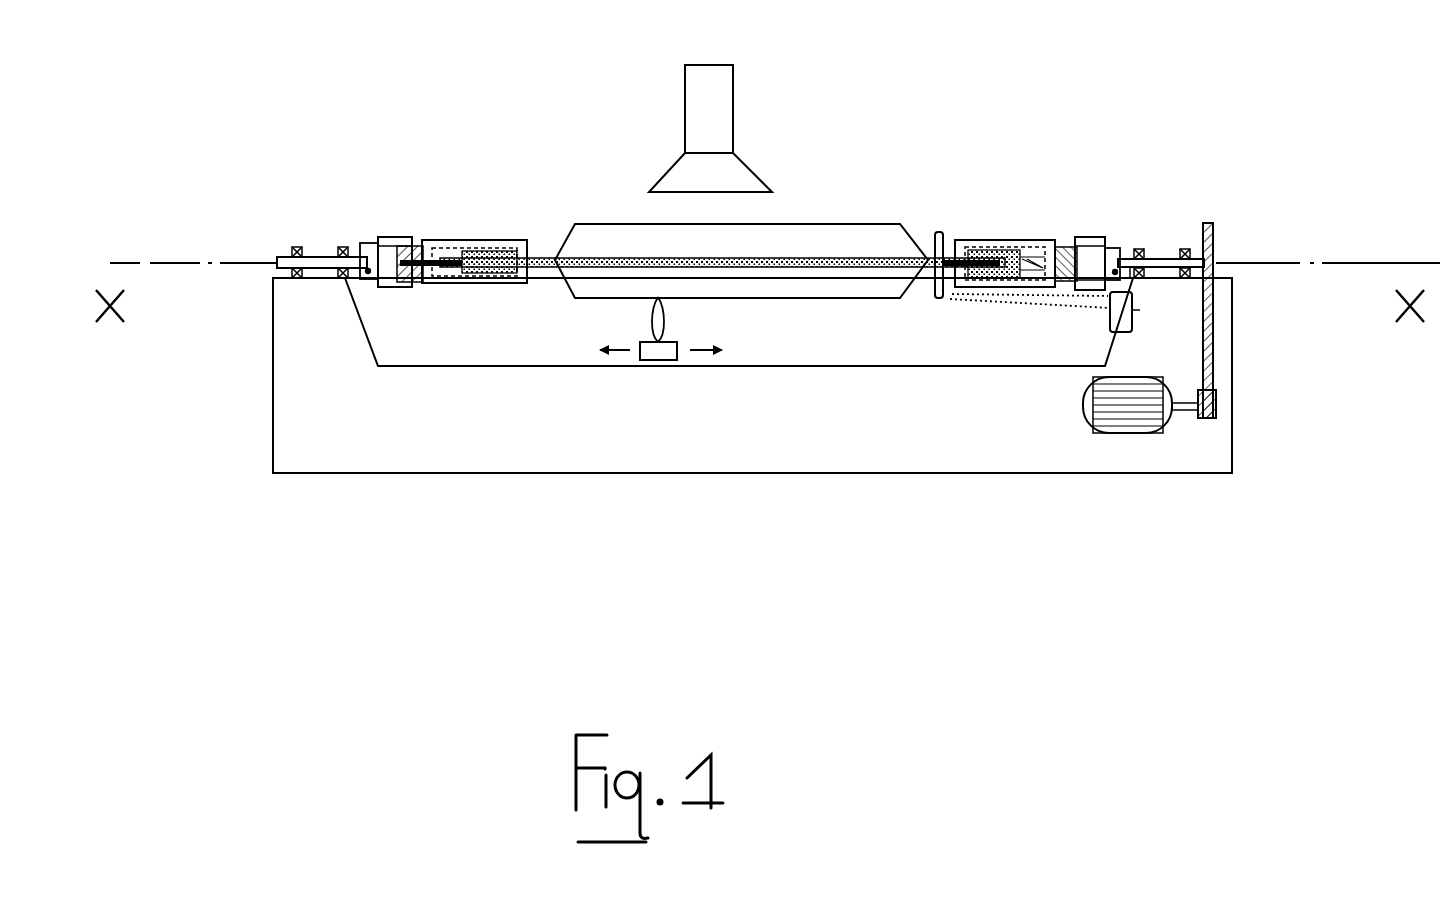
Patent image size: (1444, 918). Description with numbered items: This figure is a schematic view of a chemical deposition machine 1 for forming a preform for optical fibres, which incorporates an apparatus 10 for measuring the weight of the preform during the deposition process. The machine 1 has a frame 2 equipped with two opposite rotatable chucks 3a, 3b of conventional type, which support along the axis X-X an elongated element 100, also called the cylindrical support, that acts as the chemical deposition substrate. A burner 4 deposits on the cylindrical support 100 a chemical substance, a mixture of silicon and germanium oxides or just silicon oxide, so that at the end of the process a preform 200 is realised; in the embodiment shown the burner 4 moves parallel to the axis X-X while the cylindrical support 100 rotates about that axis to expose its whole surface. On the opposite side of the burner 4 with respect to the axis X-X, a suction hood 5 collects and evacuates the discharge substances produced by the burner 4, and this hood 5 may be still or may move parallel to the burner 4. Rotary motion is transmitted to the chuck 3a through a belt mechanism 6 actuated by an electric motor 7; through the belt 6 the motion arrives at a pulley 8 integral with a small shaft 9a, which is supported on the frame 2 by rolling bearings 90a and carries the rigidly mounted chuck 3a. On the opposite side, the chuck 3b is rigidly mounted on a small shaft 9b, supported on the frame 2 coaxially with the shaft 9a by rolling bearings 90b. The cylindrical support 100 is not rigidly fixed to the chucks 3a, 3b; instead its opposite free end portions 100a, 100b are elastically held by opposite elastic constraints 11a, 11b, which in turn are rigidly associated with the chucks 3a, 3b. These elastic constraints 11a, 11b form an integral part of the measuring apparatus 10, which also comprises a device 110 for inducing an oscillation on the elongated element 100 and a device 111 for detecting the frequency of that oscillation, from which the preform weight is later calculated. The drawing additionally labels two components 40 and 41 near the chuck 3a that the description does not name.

The chemical deposition machine 1 is at (595, 535).
The frame 2 is at (855, 425).
The chuck 3a is at (1097, 242).
The chuck 3b is at (390, 240).
The burner 4 is at (663, 348).
The suction hood 5 is at (720, 108).
The belt mechanism 6 is at (1218, 346).
The electric motor 7 is at (1128, 412).
The pulley 8 is at (1214, 236).
The small shaft 9a is at (1167, 256).
The small shaft 9b is at (317, 250).
The rolling bearings 90a is at (1140, 250).
The rolling bearings 90b is at (297, 247).
The apparatus for measuring the weight of the preform 10 is at (867, 318).
The elastic constraint 11a is at (999, 228).
The elastic constraint 11b is at (493, 238).
The plate 40 is at (940, 230).
The sensor 41 is at (1140, 305).
The elongated element 100 is at (611, 250).
The free end portion 100a is at (950, 294).
The free end portion 100b is at (545, 281).
The device for inducing an oscillation 110 is at (1036, 297).
The device for detecting the frequency of oscillation 111 is at (1143, 303).
The preform 200 is at (794, 246).